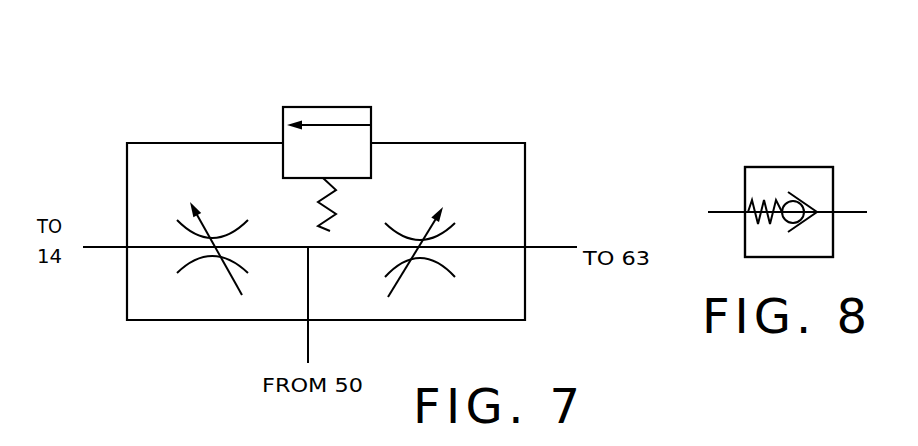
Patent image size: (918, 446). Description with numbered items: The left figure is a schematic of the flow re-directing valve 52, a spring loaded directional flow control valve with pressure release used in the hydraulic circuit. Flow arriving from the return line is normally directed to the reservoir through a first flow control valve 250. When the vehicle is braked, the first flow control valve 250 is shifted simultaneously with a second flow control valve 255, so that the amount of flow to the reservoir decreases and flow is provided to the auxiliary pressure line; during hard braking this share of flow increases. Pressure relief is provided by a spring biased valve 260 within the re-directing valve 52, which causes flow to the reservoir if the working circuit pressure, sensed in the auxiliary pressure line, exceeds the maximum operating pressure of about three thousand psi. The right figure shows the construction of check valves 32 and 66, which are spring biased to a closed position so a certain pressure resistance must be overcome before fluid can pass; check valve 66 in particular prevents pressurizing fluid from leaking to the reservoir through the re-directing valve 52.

In FIG. 7, the flow re-directing valve 52 is at (441, 123).
In FIG. 7, the first flow control valve 250 is at (215, 203).
In FIG. 7, the second flow control valve 255 is at (431, 200).
In FIG. 7, the spring biased valve 260 is at (320, 107).
In FIG. 8, the check valve 32 is at (794, 145).
In FIG. 8, the check valve 66 is at (789, 212).